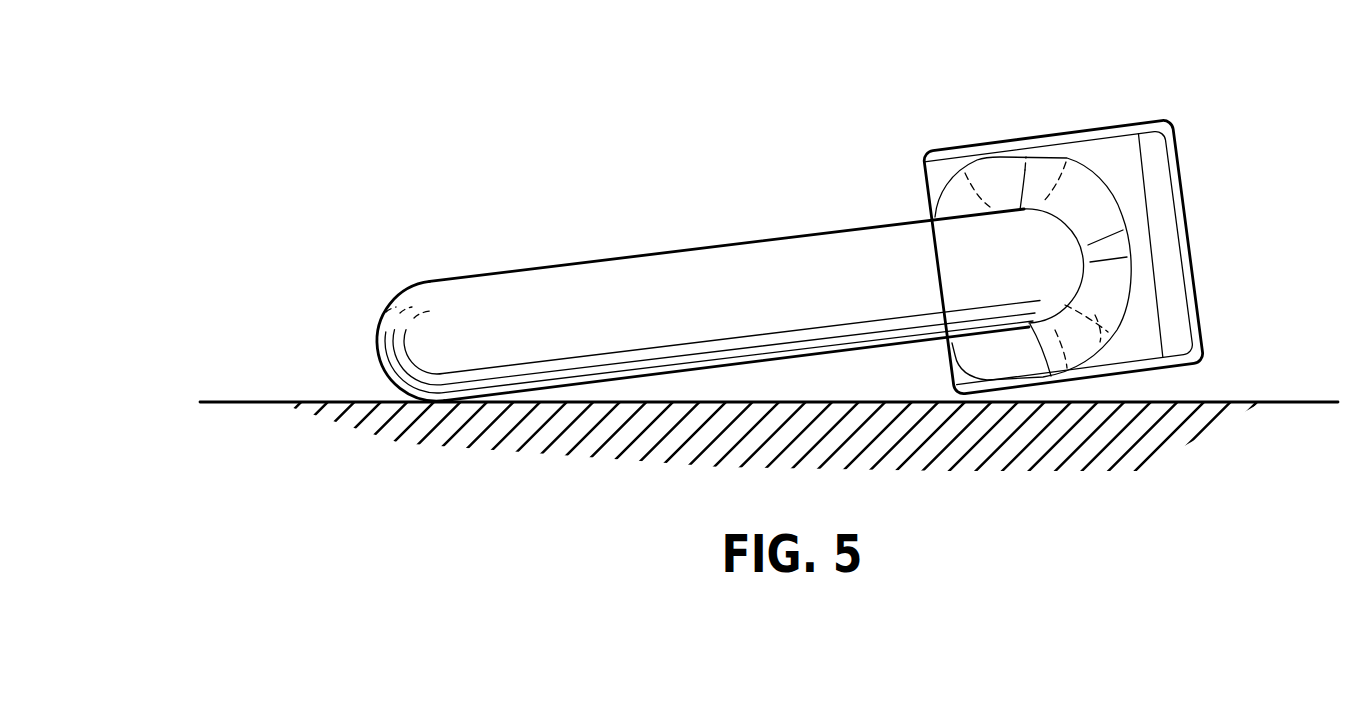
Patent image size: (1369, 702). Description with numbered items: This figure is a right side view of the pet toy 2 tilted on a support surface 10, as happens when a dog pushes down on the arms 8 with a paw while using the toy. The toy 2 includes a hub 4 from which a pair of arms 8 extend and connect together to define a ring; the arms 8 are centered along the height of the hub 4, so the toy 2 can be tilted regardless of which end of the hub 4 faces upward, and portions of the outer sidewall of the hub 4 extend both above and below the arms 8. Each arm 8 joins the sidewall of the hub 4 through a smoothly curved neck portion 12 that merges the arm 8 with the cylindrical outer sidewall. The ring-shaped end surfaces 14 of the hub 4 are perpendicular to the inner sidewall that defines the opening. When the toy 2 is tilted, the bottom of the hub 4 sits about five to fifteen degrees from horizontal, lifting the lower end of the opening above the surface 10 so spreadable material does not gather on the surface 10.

The pet toy 2 is at (845, 102).
The hub 4 is at (1155, 181).
The arms 8 is at (725, 255).
The support surface 10 is at (925, 410).
The neck portion 12 is at (1005, 185).
The end surfaces 14 is at (1115, 125).